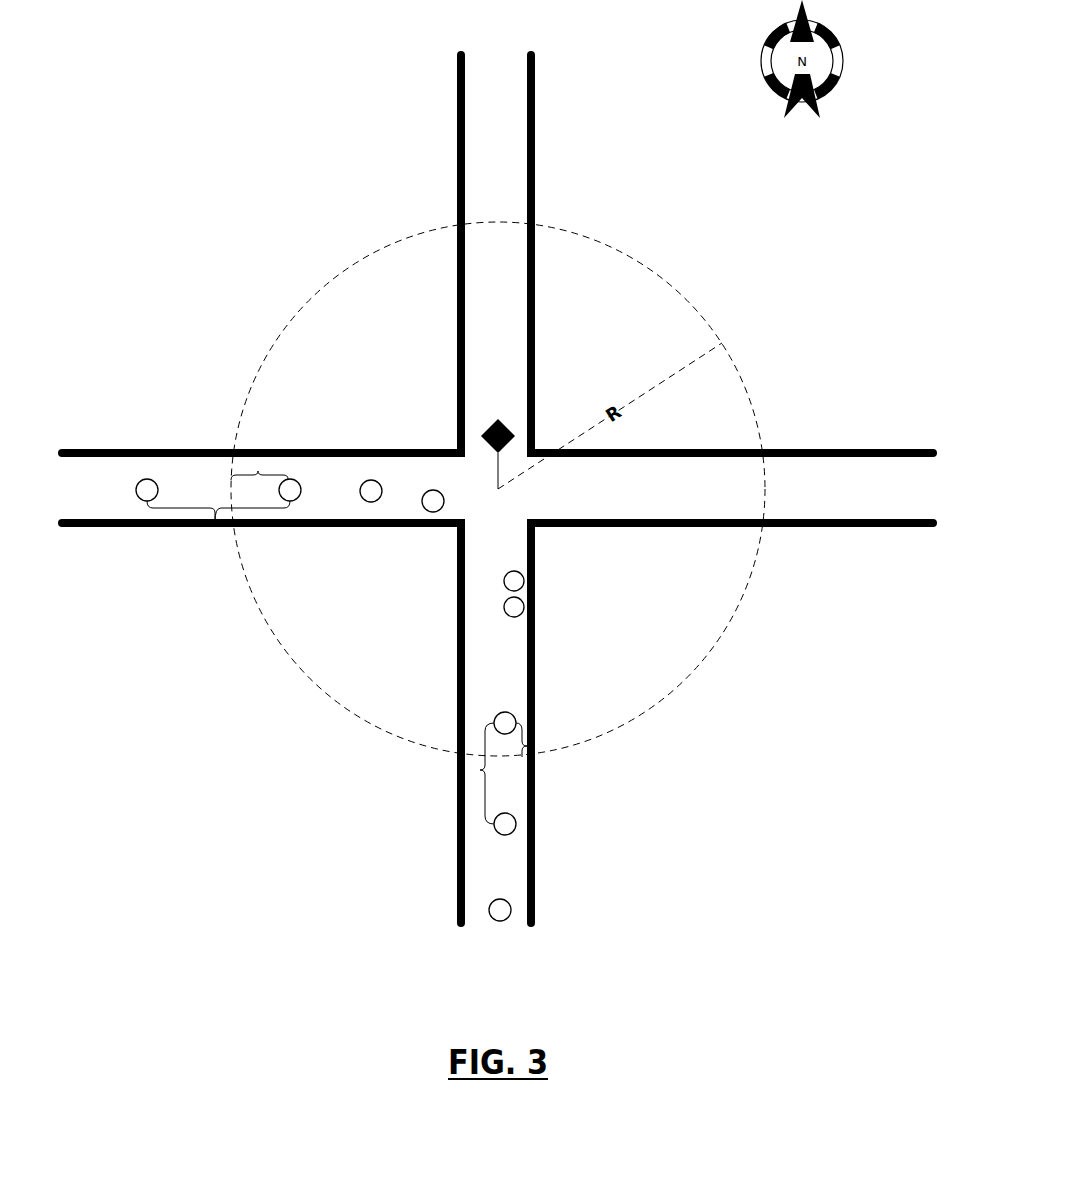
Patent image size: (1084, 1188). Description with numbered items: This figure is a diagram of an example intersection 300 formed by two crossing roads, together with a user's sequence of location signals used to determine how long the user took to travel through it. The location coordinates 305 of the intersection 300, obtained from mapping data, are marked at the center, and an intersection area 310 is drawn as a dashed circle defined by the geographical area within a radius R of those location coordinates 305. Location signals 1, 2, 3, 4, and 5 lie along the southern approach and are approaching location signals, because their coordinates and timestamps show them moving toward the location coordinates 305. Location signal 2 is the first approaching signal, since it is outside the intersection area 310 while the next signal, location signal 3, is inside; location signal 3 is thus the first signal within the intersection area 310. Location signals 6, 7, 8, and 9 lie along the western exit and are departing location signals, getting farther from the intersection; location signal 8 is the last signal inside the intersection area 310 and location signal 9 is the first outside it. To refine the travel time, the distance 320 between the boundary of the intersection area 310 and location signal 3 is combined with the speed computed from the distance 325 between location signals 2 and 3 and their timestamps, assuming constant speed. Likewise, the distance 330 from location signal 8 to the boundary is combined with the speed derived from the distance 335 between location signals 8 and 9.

The intersection 300 is at (521, 1018).
The location coordinates 305 is at (497, 419).
The intersection area 310 is at (722, 343).
The distance 320 is at (522, 757).
The distance 325 is at (480, 770).
The distance 330 is at (258, 471).
The distance 335 is at (215, 521).
The location signal 1 is at (500, 910).
The location signal 2 is at (505, 824).
The location signal 3 is at (505, 723).
The location signal 4 is at (514, 607).
The location signal 5 is at (514, 581).
The location signal 6 is at (433, 501).
The location signal 7 is at (371, 491).
The location signal 8 is at (290, 490).
The location signal 9 is at (147, 490).